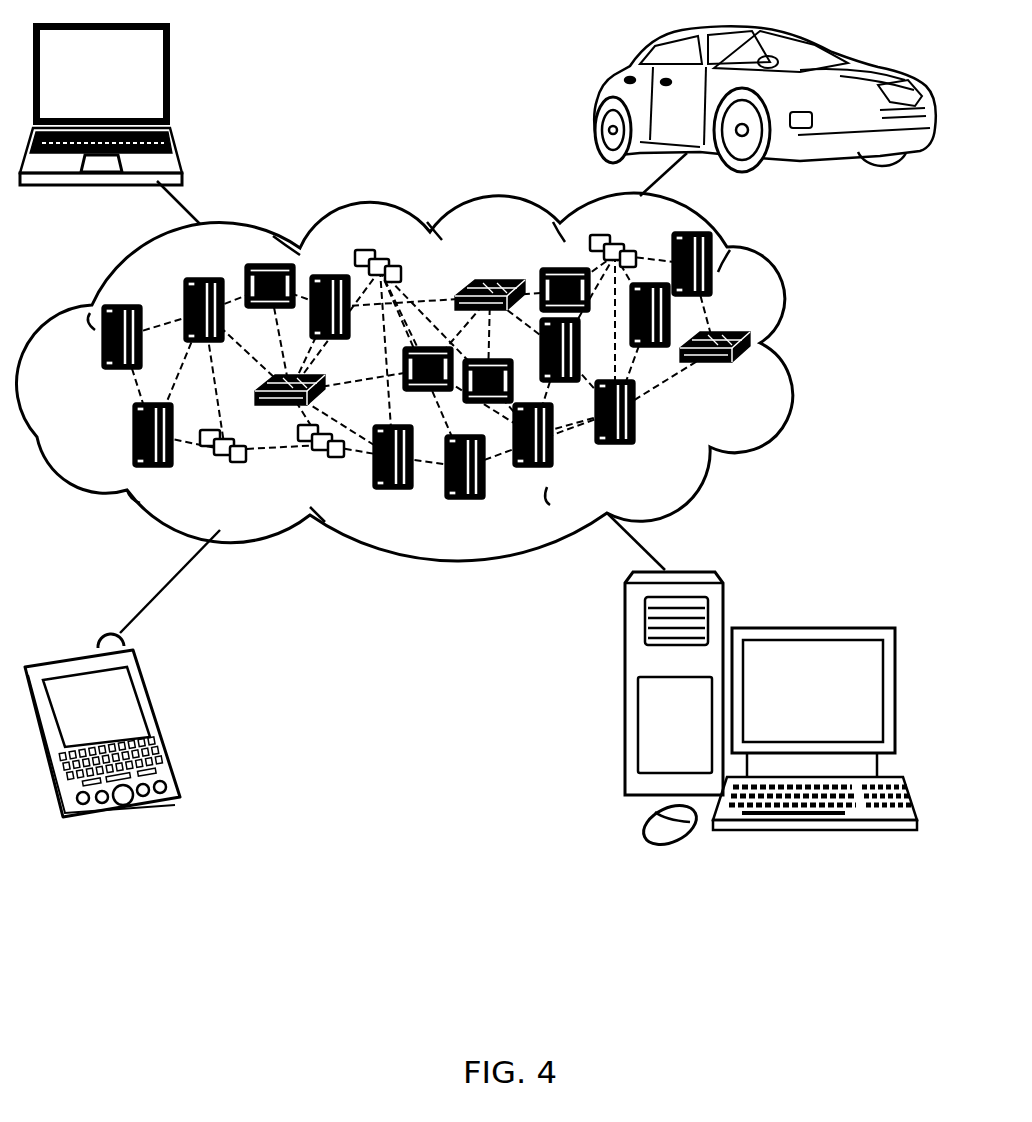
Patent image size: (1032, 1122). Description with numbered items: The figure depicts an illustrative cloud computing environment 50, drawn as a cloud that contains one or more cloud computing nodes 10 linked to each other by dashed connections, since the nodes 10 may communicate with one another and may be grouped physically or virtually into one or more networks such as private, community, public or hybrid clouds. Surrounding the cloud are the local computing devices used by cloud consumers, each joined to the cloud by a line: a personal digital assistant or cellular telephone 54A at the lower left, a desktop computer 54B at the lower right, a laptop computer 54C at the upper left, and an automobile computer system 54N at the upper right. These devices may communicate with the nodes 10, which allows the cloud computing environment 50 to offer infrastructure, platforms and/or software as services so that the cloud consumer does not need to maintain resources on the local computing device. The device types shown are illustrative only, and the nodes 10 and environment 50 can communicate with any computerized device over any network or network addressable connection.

The cloud computing node 10 is at (766, 380).
The cloud computing environment 50 is at (442, 377).
The personal digital assistant or cellular telephone 54A is at (157, 720).
The desktop computer 54B is at (810, 628).
The laptop computer 54C is at (173, 84).
The automobile computer system 54N is at (593, 97).